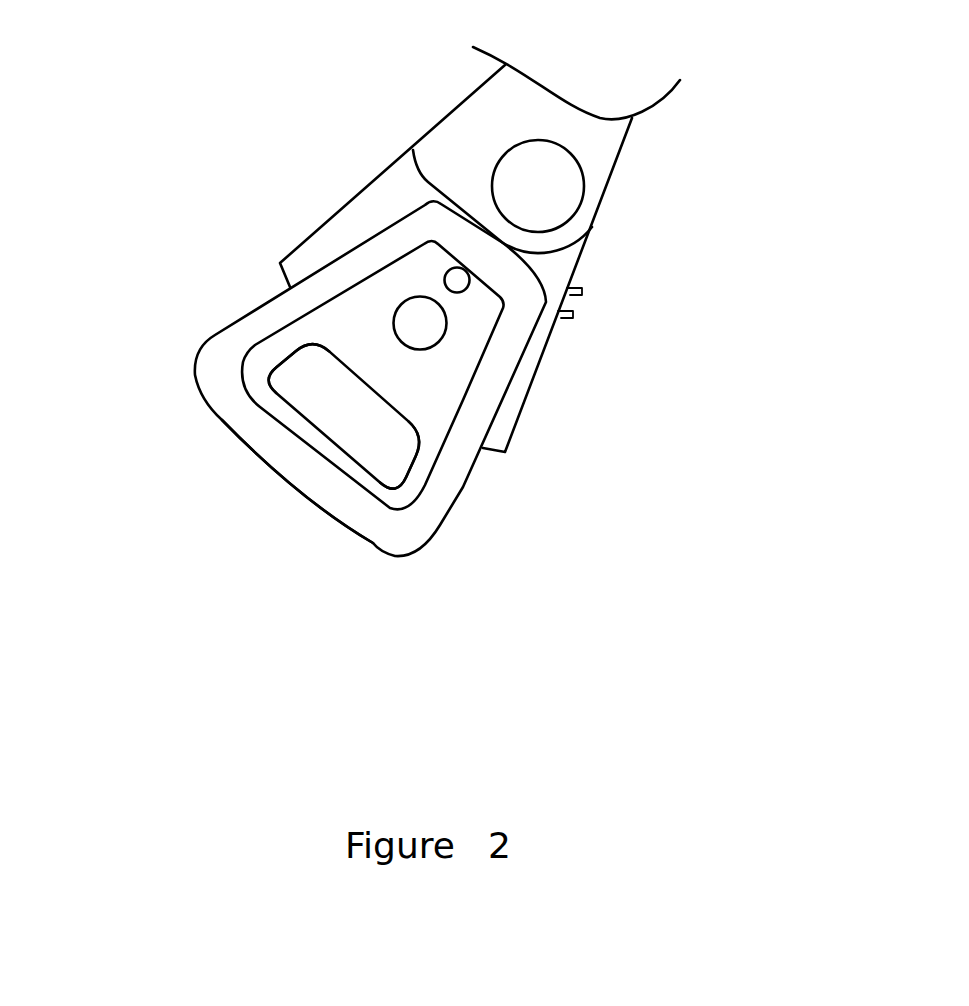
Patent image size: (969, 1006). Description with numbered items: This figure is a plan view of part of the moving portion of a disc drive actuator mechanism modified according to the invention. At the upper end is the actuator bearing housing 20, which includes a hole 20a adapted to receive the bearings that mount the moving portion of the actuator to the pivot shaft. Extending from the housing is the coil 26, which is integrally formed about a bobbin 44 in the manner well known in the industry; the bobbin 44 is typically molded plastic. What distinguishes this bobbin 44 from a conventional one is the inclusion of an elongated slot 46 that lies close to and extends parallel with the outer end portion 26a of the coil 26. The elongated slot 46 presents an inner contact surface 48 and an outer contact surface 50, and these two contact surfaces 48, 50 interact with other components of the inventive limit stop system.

The actuator bearing housing 20 is at (477, 133).
The hole 20a is at (545, 190).
The coil 26 is at (505, 332).
The outer end portion of the coil 26a is at (313, 465).
The bobbin 44 is at (422, 393).
The elongated slot 46 is at (297, 395).
The inner contact surface 48 is at (292, 365).
The outer contact surface 50 is at (420, 462).